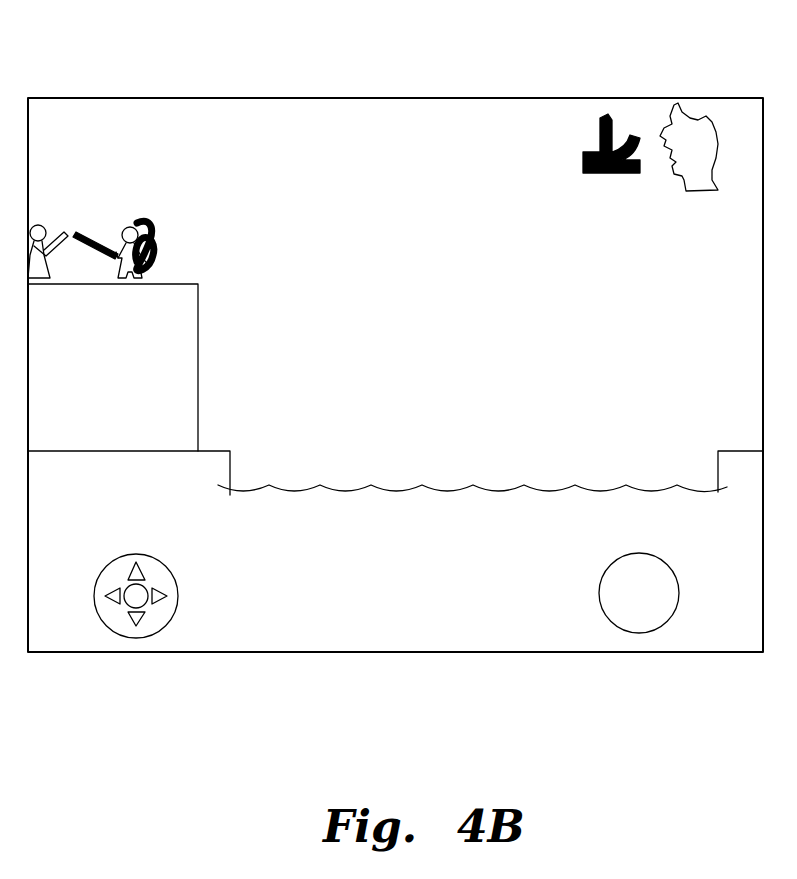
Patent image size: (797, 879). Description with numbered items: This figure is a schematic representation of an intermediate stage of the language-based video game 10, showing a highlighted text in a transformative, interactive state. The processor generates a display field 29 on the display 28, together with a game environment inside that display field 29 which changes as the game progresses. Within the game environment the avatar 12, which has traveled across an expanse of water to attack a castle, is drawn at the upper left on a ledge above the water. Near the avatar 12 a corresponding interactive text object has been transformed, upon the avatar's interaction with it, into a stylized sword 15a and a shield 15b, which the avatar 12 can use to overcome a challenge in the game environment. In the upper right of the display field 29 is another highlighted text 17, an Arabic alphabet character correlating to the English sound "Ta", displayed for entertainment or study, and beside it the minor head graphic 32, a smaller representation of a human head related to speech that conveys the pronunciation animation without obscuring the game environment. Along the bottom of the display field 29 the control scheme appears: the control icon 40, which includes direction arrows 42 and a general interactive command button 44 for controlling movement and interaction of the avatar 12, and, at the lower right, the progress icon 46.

The language-based video game 10 is at (397, 62).
The avatar 12 is at (134, 226).
The stylized sword 15a is at (90, 240).
The shield 15b is at (163, 250).
The highlighted text 17 is at (614, 118).
The display 28 is at (455, 653).
The display field 29 is at (323, 142).
The minor head graphic 32 is at (704, 116).
The control icon 40 is at (160, 560).
The direction arrows 42 is at (132, 572).
The general interactive command button 44 is at (145, 610).
The progress icon 46 is at (640, 634).